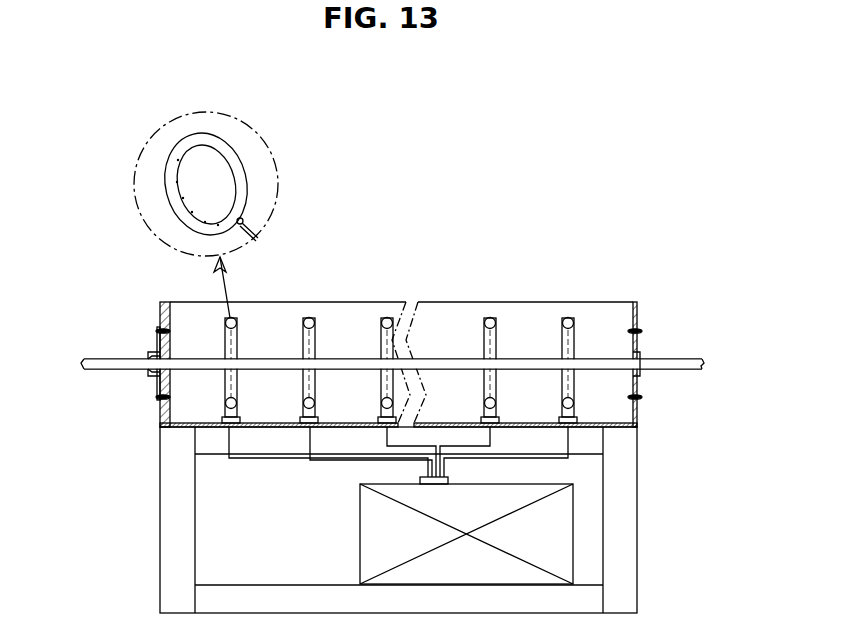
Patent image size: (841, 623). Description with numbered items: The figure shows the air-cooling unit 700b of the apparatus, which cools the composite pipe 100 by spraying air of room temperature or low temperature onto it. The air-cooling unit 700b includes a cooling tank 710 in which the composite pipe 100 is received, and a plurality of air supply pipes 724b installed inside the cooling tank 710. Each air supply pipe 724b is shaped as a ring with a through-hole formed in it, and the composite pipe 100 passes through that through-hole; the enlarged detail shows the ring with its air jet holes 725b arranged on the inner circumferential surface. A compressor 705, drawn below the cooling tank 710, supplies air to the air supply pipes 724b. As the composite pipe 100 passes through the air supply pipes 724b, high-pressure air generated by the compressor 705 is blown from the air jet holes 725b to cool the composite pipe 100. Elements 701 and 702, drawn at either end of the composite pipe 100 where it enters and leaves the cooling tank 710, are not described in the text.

The composite pipe 100 is at (100, 360).
The air-cooling unit 700b is at (469, 281).
The first bearing 701 is at (152, 375).
The second bearing 702 is at (640, 366).
The compressor 705 is at (573, 544).
The cooling tank 710 is at (612, 300).
The air supply pipe 724b is at (198, 133).
The air jet hole 725b is at (195, 211).